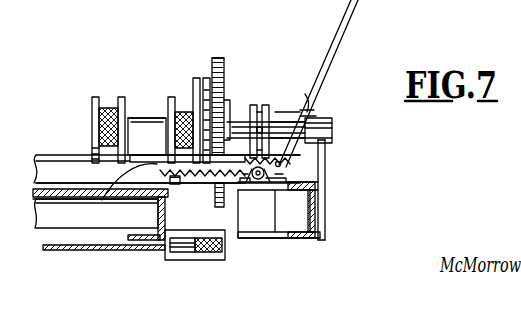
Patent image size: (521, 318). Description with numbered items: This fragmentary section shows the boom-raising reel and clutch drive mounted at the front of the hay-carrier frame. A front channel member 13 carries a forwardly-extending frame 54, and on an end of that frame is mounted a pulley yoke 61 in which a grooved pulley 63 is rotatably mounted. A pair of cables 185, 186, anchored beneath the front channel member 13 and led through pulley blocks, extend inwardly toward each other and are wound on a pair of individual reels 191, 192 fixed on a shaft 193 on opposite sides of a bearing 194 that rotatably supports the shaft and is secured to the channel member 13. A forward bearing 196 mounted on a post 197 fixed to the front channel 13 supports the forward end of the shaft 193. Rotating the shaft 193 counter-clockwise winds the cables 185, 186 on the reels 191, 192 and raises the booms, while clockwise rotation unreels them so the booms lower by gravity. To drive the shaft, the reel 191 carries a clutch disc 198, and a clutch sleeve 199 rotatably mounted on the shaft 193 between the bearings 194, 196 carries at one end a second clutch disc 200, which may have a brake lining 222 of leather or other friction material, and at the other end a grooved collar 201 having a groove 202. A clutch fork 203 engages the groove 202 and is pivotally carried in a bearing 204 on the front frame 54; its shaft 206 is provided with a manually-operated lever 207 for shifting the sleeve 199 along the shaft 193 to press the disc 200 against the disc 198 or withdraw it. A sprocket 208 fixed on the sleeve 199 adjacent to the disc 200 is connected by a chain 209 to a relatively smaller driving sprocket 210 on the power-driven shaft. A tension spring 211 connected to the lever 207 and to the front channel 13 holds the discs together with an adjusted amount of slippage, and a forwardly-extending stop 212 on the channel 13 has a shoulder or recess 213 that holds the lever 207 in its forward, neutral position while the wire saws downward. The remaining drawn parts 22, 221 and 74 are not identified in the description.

The reel 192 is at (93, 98).
The cable 186 is at (108, 102).
The housing block 22 is at (147, 137).
The bearing 194 is at (151, 118).
The reel 191 is at (167, 97).
The cable 185 is at (179, 98).
The clutch disc 198 is at (197, 95).
The brake lining 222 is at (207, 78).
The second clutch disc 200 is at (214, 58).
The driving sprocket 210 is at (224, 62).
The chain 209 is at (228, 100).
The shoulder or recess 213 is at (252, 110).
The clutch sleeve 199 is at (259, 105).
The groove 202 is at (270, 112).
The clutch fork 203 is at (307, 94).
The manually-operated lever 207 is at (347, 31).
The grooved collar 201 is at (313, 108).
The shaft 193 is at (317, 113).
The forward bearing 196 is at (333, 131).
The rack bar 221 is at (290, 152).
The post 197 is at (326, 172).
The clutch fork shaft 206 is at (262, 184).
The bearing 204 is at (269, 192).
The forwardly-extending frame 54 is at (311, 240).
The sprocket 208 is at (220, 208).
The tension spring 211 is at (194, 186).
The stop 212 is at (114, 199).
The front channel member 13 is at (160, 217).
The guide bar 74 is at (99, 251).
The pulley yoke 61 is at (186, 261).
The grooved pulley 63 is at (223, 249).